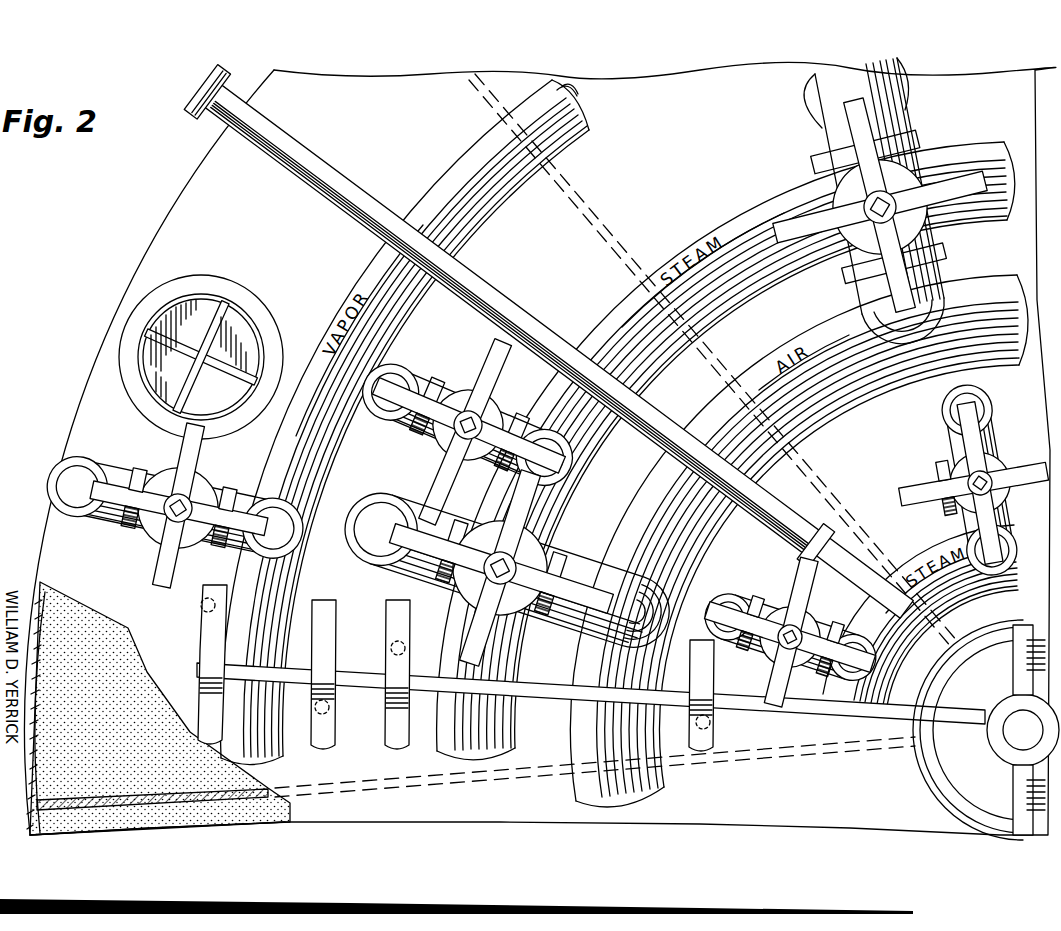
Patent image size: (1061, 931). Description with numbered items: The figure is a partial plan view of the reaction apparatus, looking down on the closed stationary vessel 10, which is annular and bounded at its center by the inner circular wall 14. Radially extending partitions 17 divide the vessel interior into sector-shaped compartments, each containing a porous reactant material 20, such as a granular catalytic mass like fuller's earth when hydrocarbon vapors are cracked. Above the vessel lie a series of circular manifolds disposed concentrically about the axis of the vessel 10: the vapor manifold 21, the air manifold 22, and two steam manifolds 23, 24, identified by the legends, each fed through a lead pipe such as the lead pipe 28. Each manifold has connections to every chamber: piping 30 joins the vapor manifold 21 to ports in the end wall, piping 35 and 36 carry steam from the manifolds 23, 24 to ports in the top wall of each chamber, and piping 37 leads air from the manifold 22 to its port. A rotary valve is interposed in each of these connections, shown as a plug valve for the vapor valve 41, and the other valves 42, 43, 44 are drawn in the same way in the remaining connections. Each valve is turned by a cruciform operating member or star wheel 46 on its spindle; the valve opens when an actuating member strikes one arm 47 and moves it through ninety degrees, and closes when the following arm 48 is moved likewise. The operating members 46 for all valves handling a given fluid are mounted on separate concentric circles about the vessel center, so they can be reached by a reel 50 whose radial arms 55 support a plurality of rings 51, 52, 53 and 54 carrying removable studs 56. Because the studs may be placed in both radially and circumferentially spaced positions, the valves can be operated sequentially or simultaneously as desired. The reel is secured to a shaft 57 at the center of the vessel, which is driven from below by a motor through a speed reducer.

The closed stationary vessel 10 is at (37, 527).
The inner circular wall 14 is at (915, 766).
The radially extending partition 17 is at (620, 222).
The porous reactant material 20 is at (183, 680).
The vapor manifold 21 is at (450, 178).
The air manifold 22 is at (718, 372).
The steam manifold 23 is at (622, 312).
The steam manifold 24 is at (908, 550).
The lead pipe 28 is at (225, 122).
The piping 30 is at (75, 475).
The piping 35 is at (438, 370).
The piping 36 is at (955, 442).
The piping 37 is at (365, 505).
The vapor valve 41 is at (205, 495).
The valve 42 is at (540, 550).
The valve handle 43 is at (495, 418).
The valve 44 is at (965, 470).
The cruciform operating member 46 is at (147, 551).
The arm 47 is at (105, 515).
The following arm 48 is at (185, 452).
The reel 50 is at (998, 710).
The ring 51 is at (210, 705).
The ring 52 is at (395, 735).
The ring 53 is at (320, 730).
The ring 54 is at (713, 731).
The radial arm 55 is at (540, 697).
The removable stud 56 is at (198, 627).
The shaft 57 is at (1012, 737).